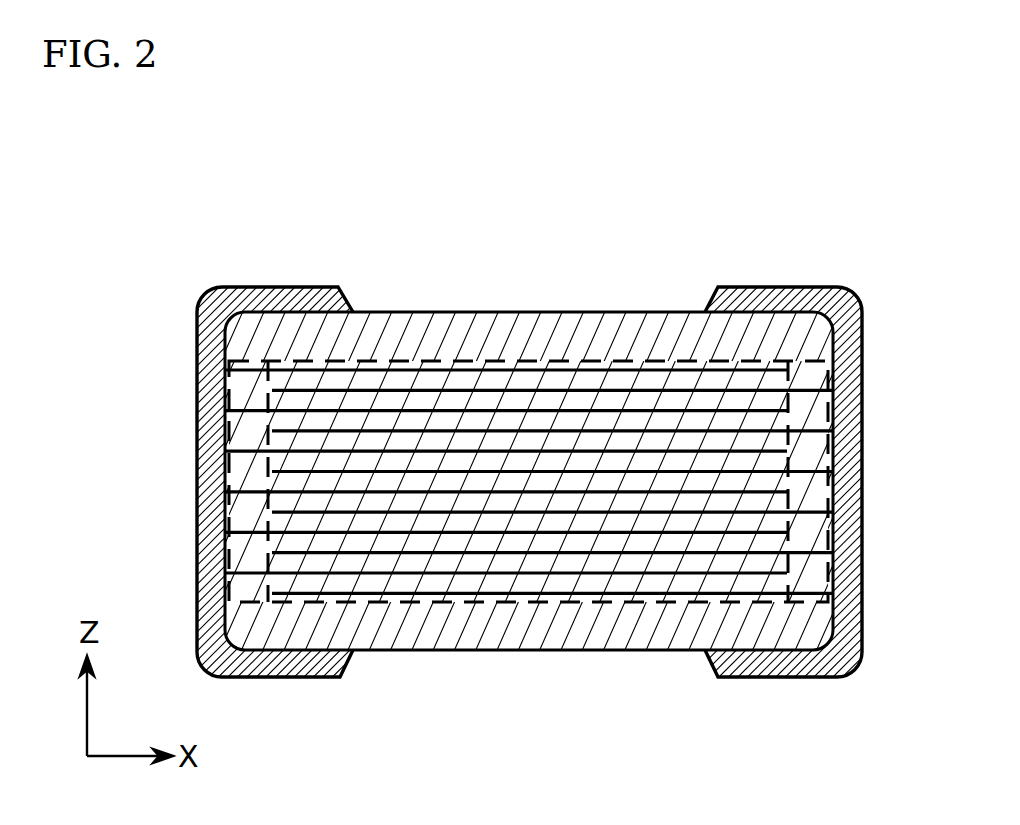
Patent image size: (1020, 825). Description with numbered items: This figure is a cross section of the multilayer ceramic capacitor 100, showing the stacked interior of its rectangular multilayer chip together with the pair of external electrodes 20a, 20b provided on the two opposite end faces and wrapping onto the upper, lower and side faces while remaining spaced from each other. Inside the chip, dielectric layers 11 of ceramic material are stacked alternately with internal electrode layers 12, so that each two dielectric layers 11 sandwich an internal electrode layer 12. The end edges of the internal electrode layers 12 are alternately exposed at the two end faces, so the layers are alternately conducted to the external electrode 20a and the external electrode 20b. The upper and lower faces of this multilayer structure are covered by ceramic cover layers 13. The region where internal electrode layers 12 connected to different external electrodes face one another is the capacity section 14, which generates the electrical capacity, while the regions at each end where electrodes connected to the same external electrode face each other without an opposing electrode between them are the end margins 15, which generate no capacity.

The multilayer ceramic capacitor 100 is at (510, 427).
The dielectric layer 11 is at (636, 563).
The internal electrode layer 12 is at (470, 532).
The cover layer 13 is at (422, 330).
The capacity section 14 is at (552, 360).
The end margin 15 is at (249, 360).
The external electrode 20a is at (222, 287).
The external electrode 20b is at (822, 287).